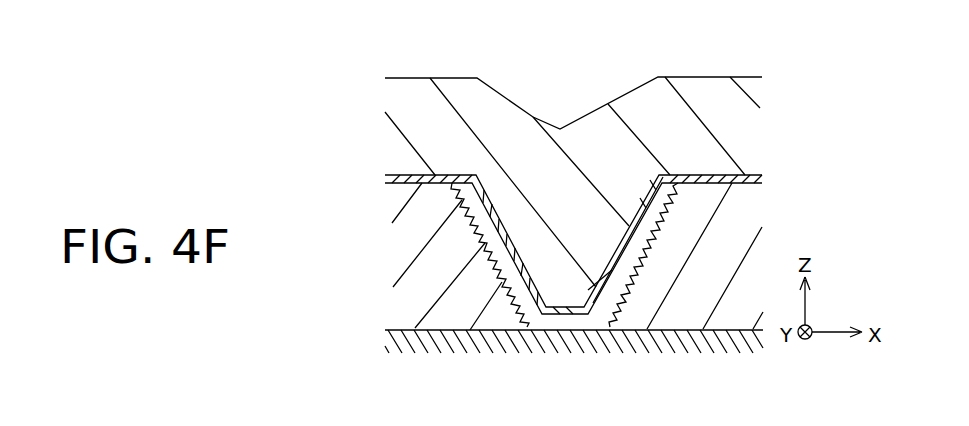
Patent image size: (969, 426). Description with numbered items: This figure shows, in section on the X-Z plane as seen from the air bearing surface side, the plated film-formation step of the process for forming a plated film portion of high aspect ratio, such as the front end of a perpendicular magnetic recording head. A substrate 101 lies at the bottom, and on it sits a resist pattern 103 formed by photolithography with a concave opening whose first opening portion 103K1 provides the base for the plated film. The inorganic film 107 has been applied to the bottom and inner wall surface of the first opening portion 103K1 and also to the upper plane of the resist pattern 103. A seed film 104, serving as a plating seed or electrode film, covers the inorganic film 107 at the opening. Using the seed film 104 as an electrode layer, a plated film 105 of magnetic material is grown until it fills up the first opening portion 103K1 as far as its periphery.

The substrate 101 is at (742, 345).
The resist pattern 103 is at (408, 253).
The first opening portion 103K1 is at (543, 262).
The seed film 104 is at (723, 174).
The plated film 105 is at (703, 113).
The inorganic film 107 is at (637, 257).